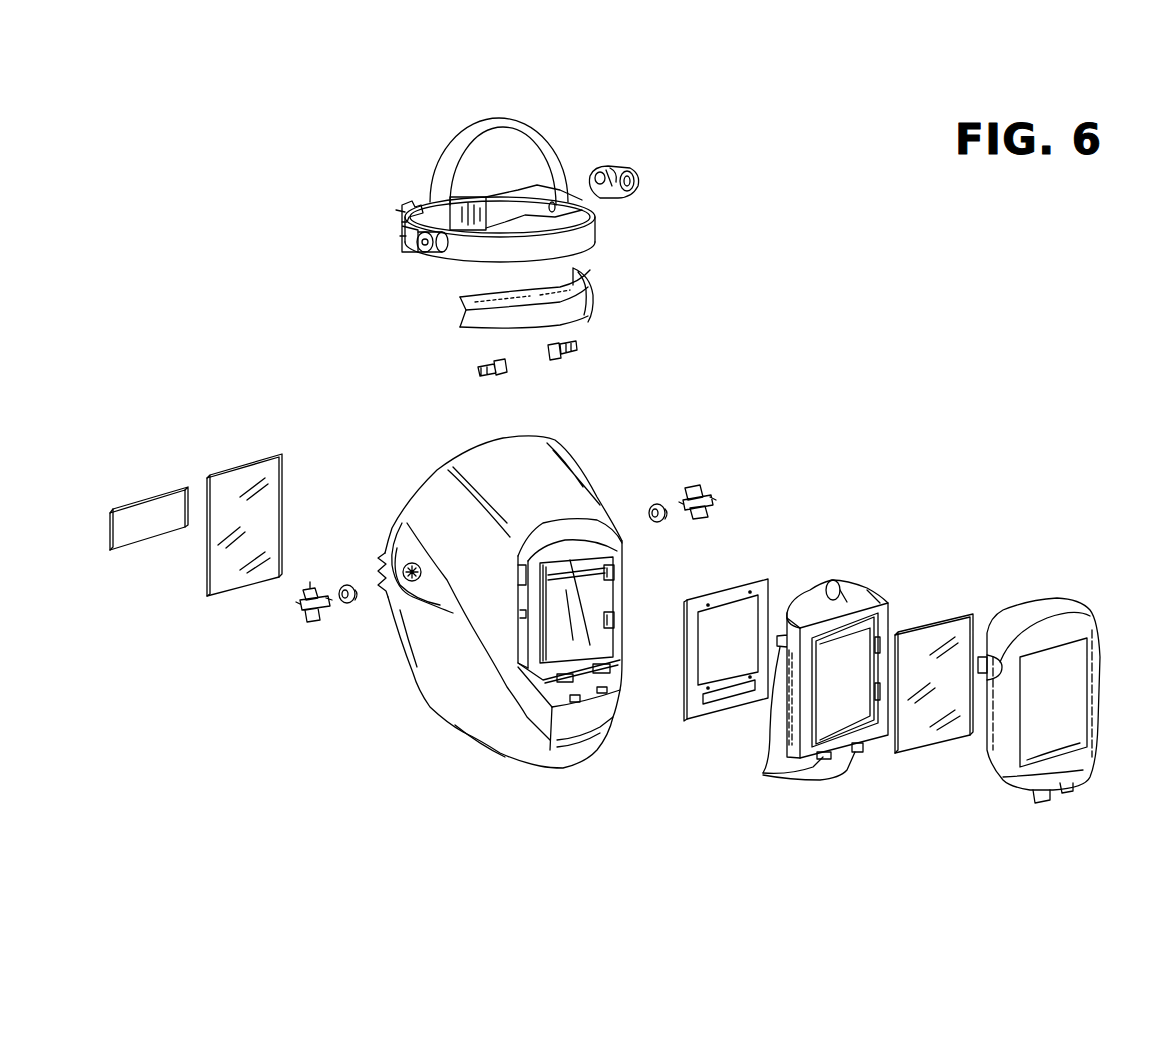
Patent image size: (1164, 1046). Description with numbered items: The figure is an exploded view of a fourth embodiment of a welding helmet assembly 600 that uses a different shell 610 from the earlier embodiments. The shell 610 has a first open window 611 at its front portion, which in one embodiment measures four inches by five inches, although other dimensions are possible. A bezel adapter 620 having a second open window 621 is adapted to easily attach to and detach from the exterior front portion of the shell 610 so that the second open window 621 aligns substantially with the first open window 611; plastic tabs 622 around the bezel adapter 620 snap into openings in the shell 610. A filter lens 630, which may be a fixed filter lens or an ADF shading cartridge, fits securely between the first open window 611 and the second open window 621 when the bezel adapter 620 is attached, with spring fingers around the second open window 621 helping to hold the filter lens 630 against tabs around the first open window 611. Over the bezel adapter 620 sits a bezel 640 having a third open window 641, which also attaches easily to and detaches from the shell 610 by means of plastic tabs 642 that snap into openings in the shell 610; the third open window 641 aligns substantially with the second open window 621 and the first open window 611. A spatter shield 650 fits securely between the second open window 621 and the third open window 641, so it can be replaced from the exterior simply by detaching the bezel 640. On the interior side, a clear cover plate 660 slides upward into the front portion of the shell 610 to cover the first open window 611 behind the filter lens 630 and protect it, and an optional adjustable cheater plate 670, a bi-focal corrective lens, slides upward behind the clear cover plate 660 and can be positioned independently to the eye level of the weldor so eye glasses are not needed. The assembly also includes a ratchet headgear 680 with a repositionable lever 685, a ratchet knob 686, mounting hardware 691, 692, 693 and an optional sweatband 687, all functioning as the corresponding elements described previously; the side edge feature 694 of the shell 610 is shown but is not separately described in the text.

The welding helmet assembly 600 is at (918, 302).
The shell 610 is at (565, 447).
The first open window 611 is at (582, 631).
The bezel adapter 620 is at (868, 587).
The second open window 621 is at (847, 680).
The plastic tabs 622 is at (763, 773).
The filter lens 630 is at (756, 578).
The bezel 640 is at (1063, 600).
The third open window 641 is at (1075, 708).
The plastic tabs 642 is at (1040, 807).
The spatter shield 650 is at (958, 615).
The clear cover plate 660 is at (258, 468).
The cheater plate 670 is at (150, 505).
The ratchet headgear 680 is at (480, 124).
The repositionable lever 685 is at (635, 168).
The ratchet knob 686 is at (408, 208).
The sweatband 687 is at (560, 323).
The mounting hardware 691 is at (565, 358).
The mounting hardware 692 is at (348, 607).
The mounting hardware 693 is at (300, 605).
The helmet side edge 694 is at (382, 595).